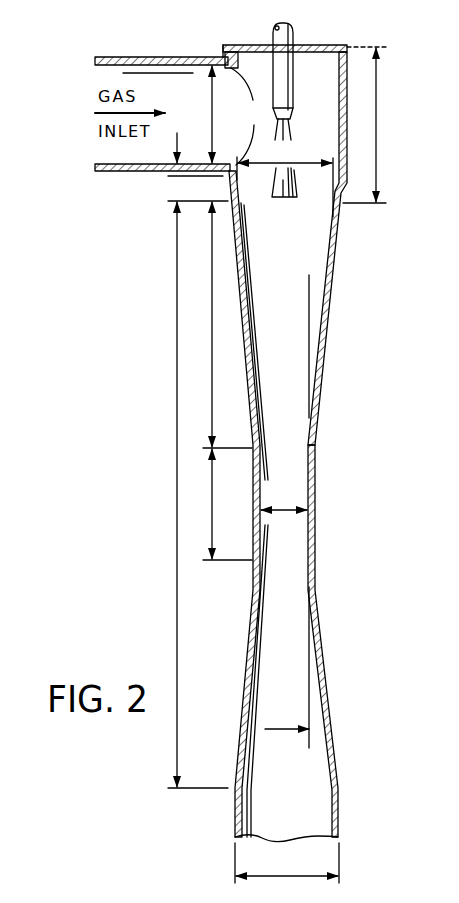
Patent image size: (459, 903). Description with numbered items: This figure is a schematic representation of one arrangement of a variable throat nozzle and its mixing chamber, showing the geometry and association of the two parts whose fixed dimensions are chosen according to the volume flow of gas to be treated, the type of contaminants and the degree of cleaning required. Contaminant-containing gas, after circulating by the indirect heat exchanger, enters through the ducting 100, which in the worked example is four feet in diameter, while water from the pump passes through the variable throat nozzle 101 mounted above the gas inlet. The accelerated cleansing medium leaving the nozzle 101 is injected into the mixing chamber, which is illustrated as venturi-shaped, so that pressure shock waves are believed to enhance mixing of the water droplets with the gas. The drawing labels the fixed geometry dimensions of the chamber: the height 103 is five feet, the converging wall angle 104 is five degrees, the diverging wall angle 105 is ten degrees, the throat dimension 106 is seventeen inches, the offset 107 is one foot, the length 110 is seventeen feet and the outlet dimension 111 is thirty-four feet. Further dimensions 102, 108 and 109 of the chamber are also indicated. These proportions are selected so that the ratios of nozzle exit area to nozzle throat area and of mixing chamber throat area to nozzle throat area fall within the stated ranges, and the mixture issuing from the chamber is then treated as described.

The ducting 100 is at (214, 114).
The variable throat nozzle 101 is at (293, 95).
The housing inner diameter 102 is at (285, 179).
The mixing chamber dimension 103 is at (370, 125).
The mixing chamber angle 104 is at (337, 283).
The mixing chamber angle 105 is at (337, 727).
The mixing chamber dimension 106 is at (284, 496).
The mixing chamber dimension 107 is at (179, 165).
The converging section length 108 is at (210, 324).
The throat length 109 is at (223, 504).
The mixing chamber dimension 110 is at (197, 495).
The mixing chamber dimension 111 is at (287, 863).